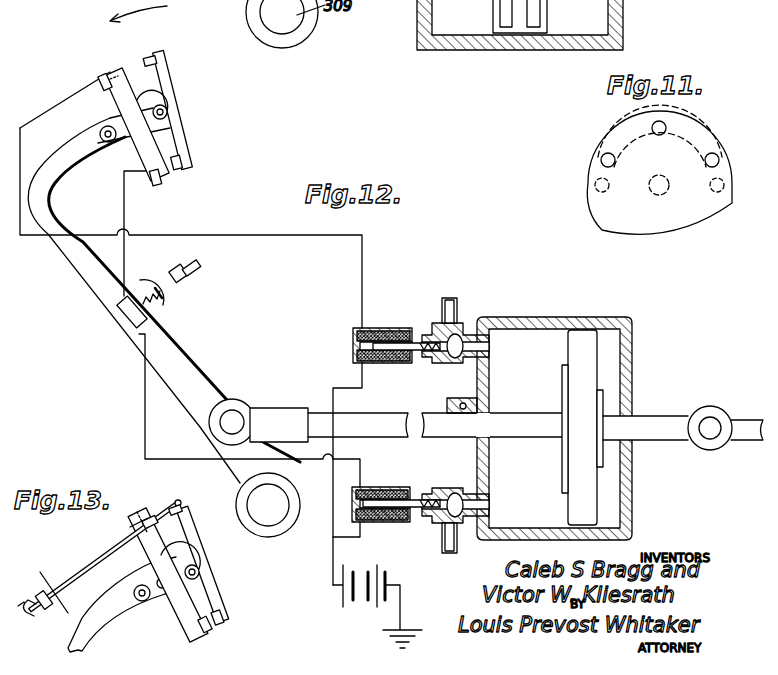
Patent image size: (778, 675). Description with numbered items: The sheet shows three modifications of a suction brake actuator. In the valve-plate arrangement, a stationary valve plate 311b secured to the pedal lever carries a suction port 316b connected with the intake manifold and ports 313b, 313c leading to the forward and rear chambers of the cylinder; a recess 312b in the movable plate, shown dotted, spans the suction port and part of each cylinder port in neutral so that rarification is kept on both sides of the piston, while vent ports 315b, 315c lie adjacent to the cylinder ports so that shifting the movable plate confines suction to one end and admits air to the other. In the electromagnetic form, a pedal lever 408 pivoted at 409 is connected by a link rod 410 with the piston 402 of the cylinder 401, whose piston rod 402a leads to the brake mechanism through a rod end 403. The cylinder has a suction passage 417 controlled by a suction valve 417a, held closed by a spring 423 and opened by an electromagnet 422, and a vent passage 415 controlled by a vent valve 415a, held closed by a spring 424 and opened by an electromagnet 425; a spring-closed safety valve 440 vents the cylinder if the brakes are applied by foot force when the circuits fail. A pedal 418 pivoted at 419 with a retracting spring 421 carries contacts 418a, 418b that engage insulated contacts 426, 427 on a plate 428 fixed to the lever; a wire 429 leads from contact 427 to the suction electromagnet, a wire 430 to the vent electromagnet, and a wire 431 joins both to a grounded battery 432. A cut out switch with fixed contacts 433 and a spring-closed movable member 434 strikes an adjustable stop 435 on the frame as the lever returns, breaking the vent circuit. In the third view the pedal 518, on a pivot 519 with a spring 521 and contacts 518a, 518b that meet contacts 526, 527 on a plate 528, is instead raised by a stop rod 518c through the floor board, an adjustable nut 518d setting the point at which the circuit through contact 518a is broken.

In FIG. 11, the stationary valve plate 311b is at (672, 223).
In FIG. 11, the recess 312b is at (577, 116).
In FIG. 11, the port 313b is at (719, 160).
In FIG. 11, the port 313c is at (601, 160).
In FIG. 11, the vent port 315b is at (723, 191).
In FIG. 11, the vent port 315c is at (598, 188).
In FIG. 11, the suction port 316b is at (667, 128).
In FIG. 12, the cylinder 401 is at (568, 317).
In FIG. 12, the piston 402 is at (588, 368).
In FIG. 12, the piston rod 402a is at (665, 437).
In FIG. 12, the rod end 403 is at (749, 443).
In FIG. 12, the pedal lever 408 is at (185, 369).
In FIG. 12, the pivot 409 is at (267, 512).
In FIG. 12, the link rod 410 is at (368, 416).
In FIG. 12, the vent passage 415 is at (457, 549).
In FIG. 12, the vent valve 415a is at (457, 461).
In FIG. 12, the suction passage 417 is at (452, 312).
In FIG. 12, the suction valve 417a is at (450, 364).
In FIG. 12, the pedal 418 is at (194, 131).
In FIG. 12, the contact 418a is at (184, 165).
In FIG. 12, the contact 418b is at (152, 55).
In FIG. 12, the pivot 419 is at (166, 110).
In FIG. 12, the retracting spring 421 is at (148, 90).
In FIG. 12, the electromagnet 422 is at (386, 328).
In FIG. 12, the spring 423 is at (433, 315).
In FIG. 12, the spring 424 is at (436, 490).
In FIG. 12, the electromagnet 425 is at (391, 523).
In FIG. 12, the contact 426 is at (177, 170).
In FIG. 12, the contact 427 is at (120, 68).
In FIG. 12, the plate 428 is at (150, 150).
In FIG. 12, the wire 429 is at (283, 239).
In FIG. 12, the wire 430 is at (147, 437).
In FIG. 12, the wire 431 is at (333, 572).
In FIG. 12, the battery 432 is at (358, 606).
In FIG. 12, the fixed contacts 433 is at (137, 296).
In FIG. 12, the movable switch member 434 is at (130, 323).
In FIG. 12, the adjustable stop 435 is at (194, 281).
In FIG. 12, the safety valve 440 is at (446, 405).
In FIG. 13, the pedal 518 is at (228, 615).
In FIG. 13, the contact 518a is at (224, 624).
In FIG. 13, the contact 518b is at (181, 502).
In FIG. 13, the pedal stop rod 518c is at (74, 576).
In FIG. 13, the adjustable nut 518d is at (40, 615).
In FIG. 13, the pivot 519 is at (199, 573).
In FIG. 13, the spring 521 is at (184, 542).
In FIG. 13, the contact 526 is at (208, 632).
In FIG. 13, the bolt 527 is at (152, 515).
In FIG. 13, the lever arm 528 is at (180, 603).